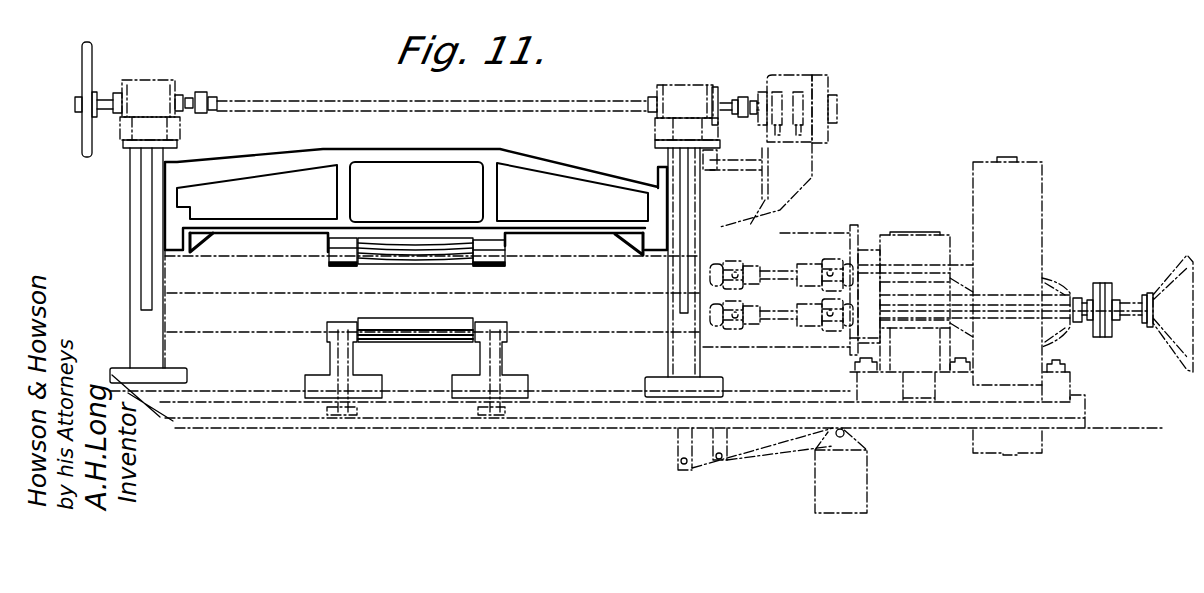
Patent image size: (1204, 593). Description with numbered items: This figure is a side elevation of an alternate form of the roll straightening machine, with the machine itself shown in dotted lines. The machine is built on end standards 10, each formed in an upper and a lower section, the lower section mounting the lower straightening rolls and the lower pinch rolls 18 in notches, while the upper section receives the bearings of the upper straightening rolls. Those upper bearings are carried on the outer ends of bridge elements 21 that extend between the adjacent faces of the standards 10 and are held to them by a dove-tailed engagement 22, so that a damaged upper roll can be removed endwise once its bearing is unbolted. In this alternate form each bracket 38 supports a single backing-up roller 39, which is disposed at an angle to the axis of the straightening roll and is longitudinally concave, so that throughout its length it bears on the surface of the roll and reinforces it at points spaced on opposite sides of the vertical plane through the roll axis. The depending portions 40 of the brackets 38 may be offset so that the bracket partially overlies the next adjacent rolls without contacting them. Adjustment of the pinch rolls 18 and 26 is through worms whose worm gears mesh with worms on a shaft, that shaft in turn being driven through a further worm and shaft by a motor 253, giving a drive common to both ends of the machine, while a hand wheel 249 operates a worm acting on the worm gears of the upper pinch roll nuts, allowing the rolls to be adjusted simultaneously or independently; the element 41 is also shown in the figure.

The hand wheel 249 is at (54, 64).
The dove-tailed engagement 22 is at (170, 162).
The bridge element 21 is at (416, 192).
The bracket 38 is at (505, 243).
The depending portion 40 is at (337, 258).
The roller 39 is at (392, 249).
The end standard 10 is at (137, 200).
The pinch roll 26 is at (170, 268).
The lower pinch roll 18 is at (175, 320).
The motor 253 is at (802, 56).
The gear housing 41 is at (862, 240).